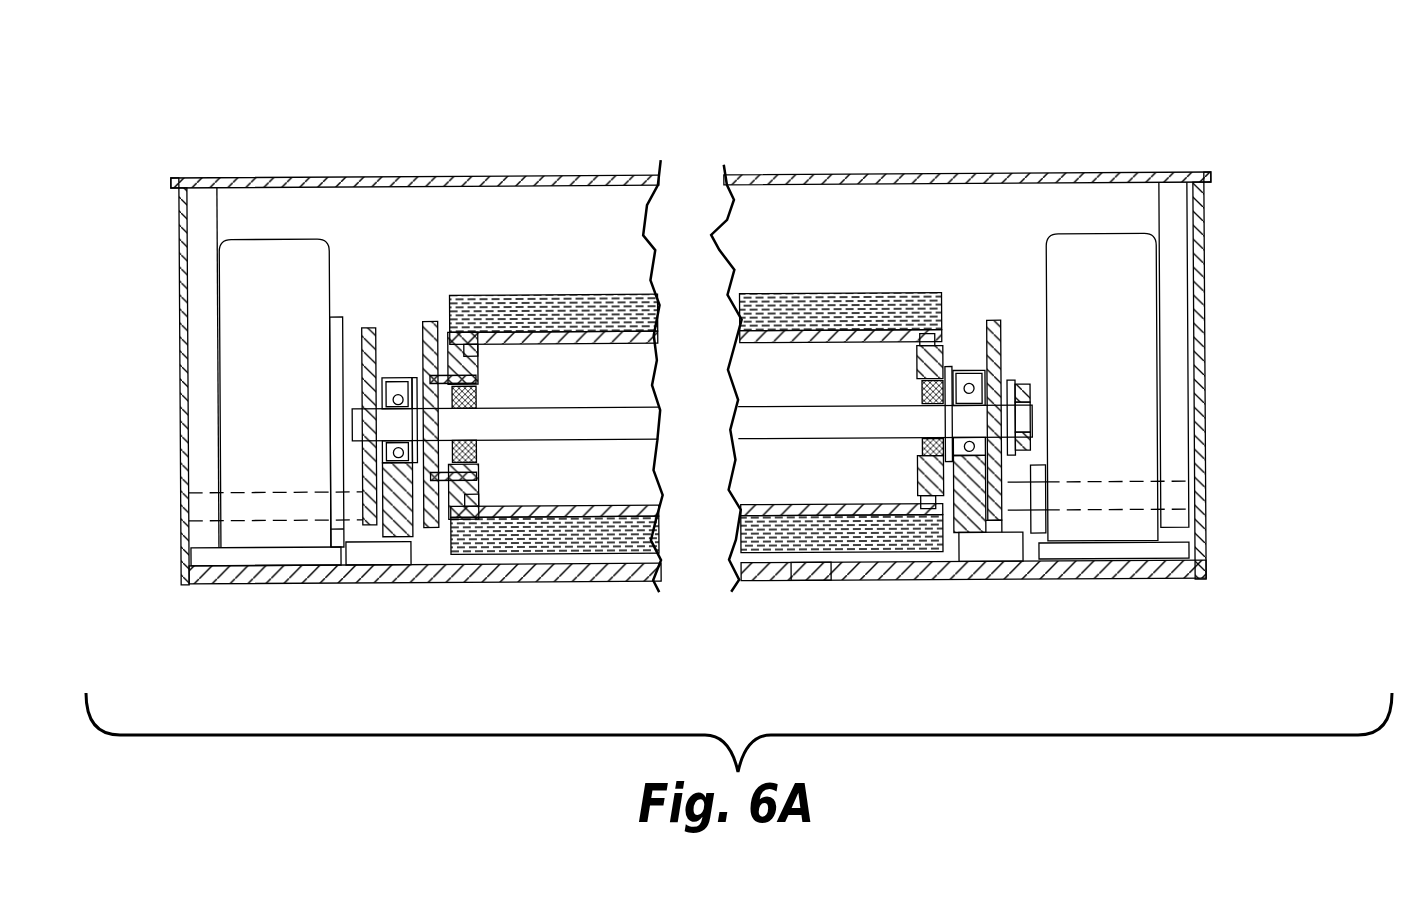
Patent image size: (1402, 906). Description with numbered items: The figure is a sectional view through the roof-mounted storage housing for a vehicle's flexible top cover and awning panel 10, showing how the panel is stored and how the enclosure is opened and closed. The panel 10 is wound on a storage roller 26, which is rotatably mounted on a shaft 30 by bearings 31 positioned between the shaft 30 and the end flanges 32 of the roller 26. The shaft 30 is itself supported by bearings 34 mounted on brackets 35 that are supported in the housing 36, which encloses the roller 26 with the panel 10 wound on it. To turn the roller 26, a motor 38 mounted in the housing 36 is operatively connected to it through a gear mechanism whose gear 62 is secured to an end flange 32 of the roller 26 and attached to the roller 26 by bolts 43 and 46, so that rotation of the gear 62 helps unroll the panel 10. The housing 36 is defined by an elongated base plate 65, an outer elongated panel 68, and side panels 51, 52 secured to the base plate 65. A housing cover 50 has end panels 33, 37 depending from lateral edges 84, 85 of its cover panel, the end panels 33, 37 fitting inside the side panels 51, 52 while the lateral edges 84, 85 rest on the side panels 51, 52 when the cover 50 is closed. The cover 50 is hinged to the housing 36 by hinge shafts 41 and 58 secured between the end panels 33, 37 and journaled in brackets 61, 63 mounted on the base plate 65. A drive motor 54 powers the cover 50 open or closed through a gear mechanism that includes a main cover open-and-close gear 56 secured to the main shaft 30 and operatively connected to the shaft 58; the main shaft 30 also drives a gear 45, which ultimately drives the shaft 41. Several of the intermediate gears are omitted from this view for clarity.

The flexible top cover and awning panel 10 is at (782, 296).
The storage roller 26 is at (733, 342).
The shaft 30 is at (608, 448).
The bearings 31 is at (480, 395).
The end flanges 32 is at (478, 350).
The end panel 33 is at (207, 247).
The bearings 34 is at (1005, 345).
The brackets 35 is at (380, 476).
The housing 36 is at (307, 585).
The end panel 37 is at (1177, 318).
The motor 38 is at (274, 310).
The hinge shaft 41 is at (230, 523).
The bolt 43 is at (480, 384).
The gear 45 is at (368, 326).
The bolt 46 is at (487, 495).
The housing cover 50 is at (492, 182).
The side panel 51 is at (182, 358).
The side panel 52 is at (1193, 507).
The drive motor 54 is at (1086, 341).
The main cover open-and-close gear 56 is at (992, 535).
The hinge shaft 58 is at (1183, 502).
The bracket 61 is at (337, 528).
The gear 62 is at (432, 320).
The bracket 63 is at (1046, 482).
The base plate 65 is at (810, 580).
The outer elongated panel 68 is at (591, 230).
The lateral edge 84 is at (172, 181).
The lateral edge 85 is at (1213, 177).